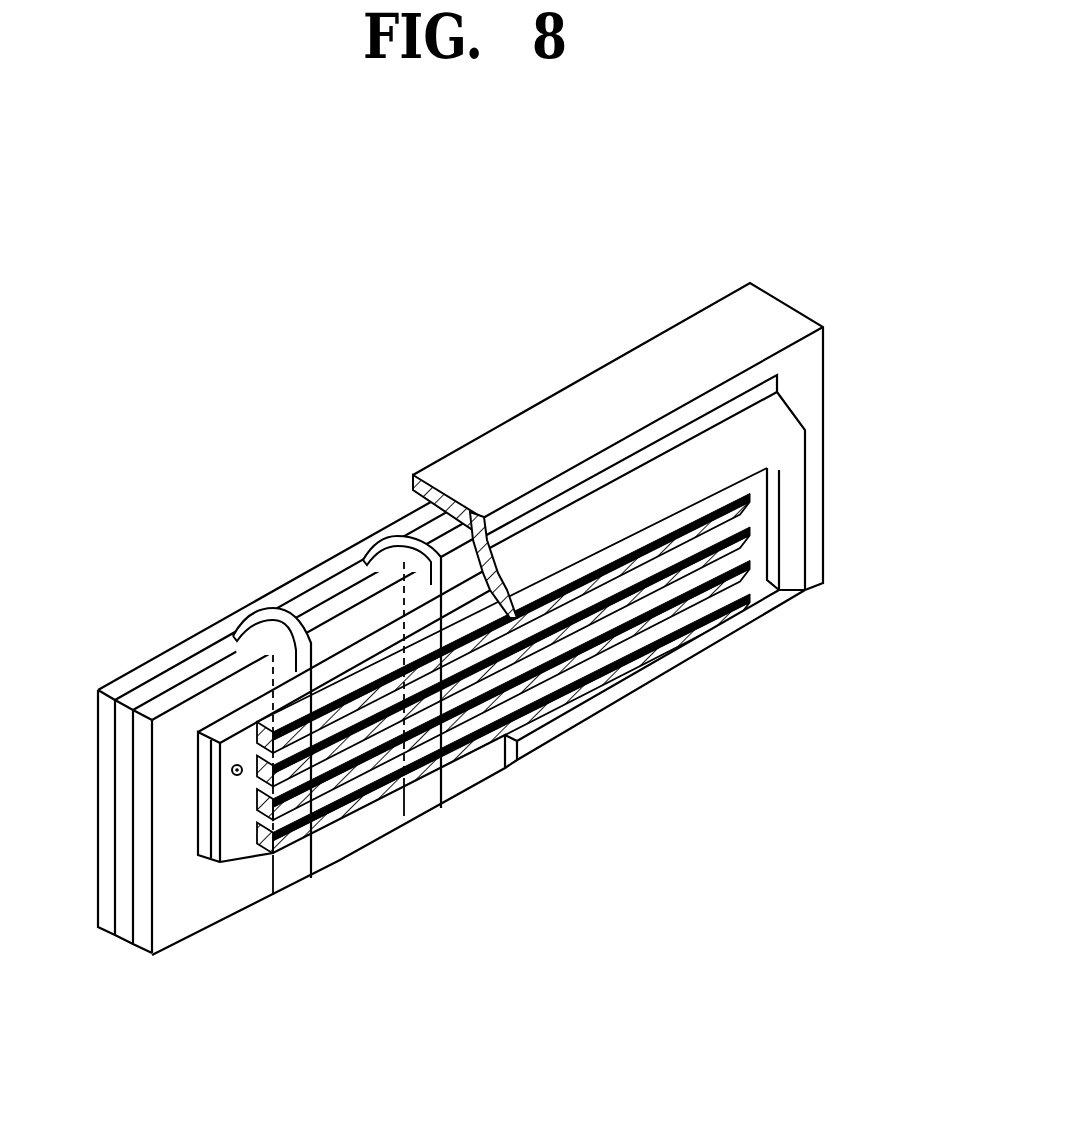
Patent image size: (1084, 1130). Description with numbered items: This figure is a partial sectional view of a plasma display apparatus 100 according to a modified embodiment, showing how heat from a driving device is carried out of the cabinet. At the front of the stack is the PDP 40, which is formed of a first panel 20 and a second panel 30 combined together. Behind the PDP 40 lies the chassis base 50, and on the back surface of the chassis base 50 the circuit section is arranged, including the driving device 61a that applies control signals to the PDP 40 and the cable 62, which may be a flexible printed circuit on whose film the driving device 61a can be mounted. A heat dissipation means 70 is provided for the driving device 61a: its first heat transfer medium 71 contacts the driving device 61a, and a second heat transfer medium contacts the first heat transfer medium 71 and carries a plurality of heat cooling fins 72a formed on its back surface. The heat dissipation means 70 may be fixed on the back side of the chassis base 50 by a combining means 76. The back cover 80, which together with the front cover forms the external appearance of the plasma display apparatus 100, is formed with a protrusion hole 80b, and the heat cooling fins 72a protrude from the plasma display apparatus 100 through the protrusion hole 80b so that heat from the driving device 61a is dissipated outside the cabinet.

The first panel 20 is at (118, 687).
The second panel 30 is at (166, 684).
The PDP 40 is at (265, 719).
The chassis base 50 is at (220, 675).
The driving device 61a is at (300, 778).
The cable 62 is at (267, 627).
The heat dissipation means 70 is at (329, 815).
The first heat transfer medium 71 is at (197, 852).
The heat cooling fins 72a is at (367, 797).
The combining means 76 is at (237, 780).
The back cover 80 is at (666, 450).
The protrusion hole 80b is at (773, 543).
The plasma display apparatus 100 is at (495, 674).